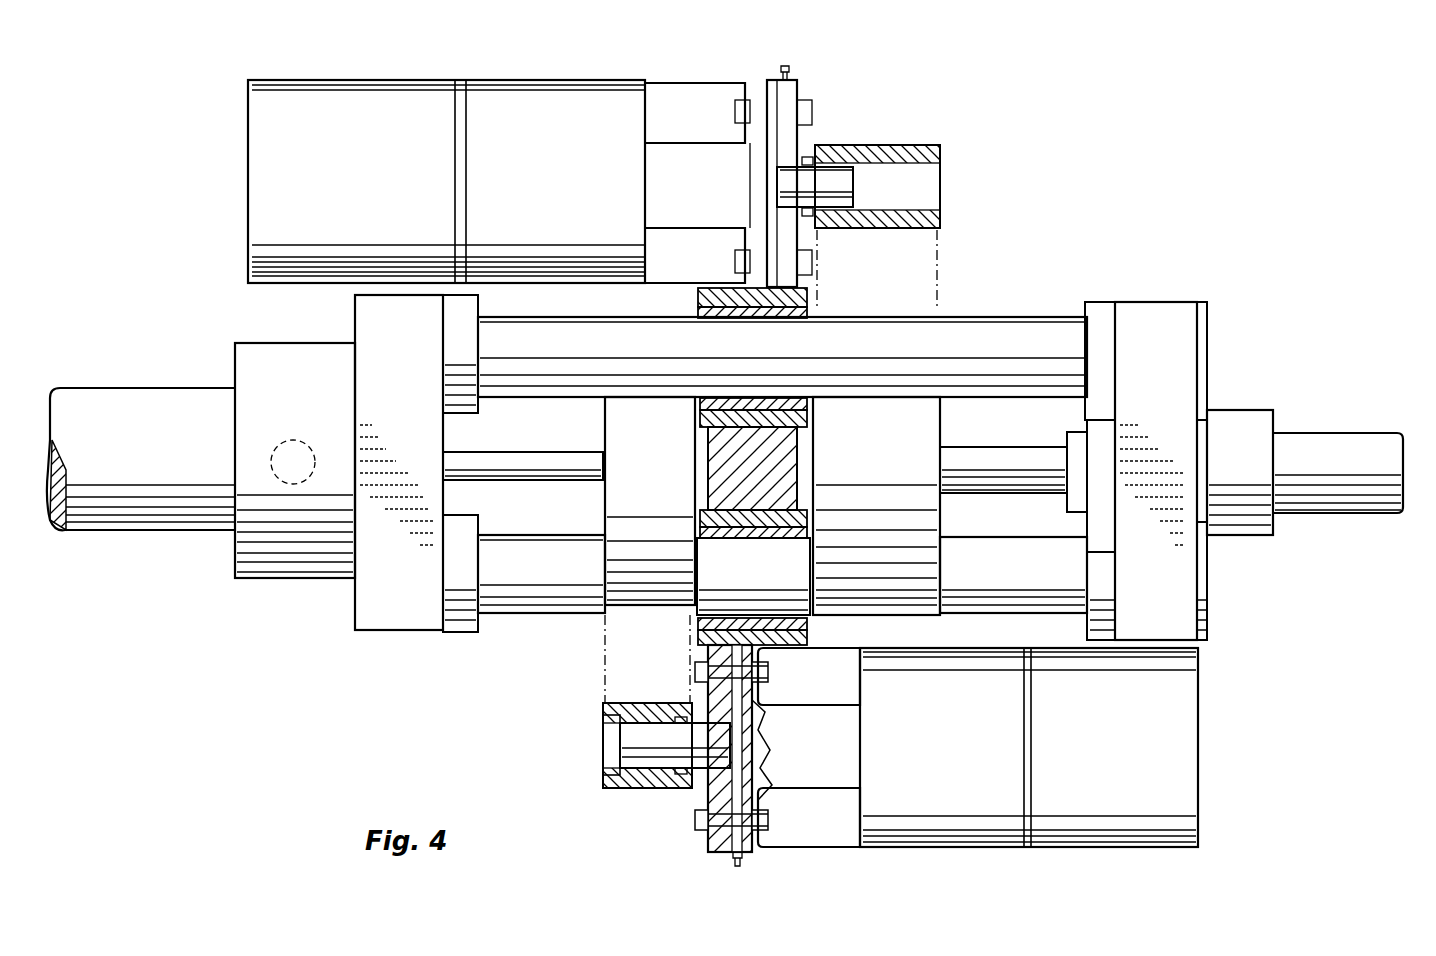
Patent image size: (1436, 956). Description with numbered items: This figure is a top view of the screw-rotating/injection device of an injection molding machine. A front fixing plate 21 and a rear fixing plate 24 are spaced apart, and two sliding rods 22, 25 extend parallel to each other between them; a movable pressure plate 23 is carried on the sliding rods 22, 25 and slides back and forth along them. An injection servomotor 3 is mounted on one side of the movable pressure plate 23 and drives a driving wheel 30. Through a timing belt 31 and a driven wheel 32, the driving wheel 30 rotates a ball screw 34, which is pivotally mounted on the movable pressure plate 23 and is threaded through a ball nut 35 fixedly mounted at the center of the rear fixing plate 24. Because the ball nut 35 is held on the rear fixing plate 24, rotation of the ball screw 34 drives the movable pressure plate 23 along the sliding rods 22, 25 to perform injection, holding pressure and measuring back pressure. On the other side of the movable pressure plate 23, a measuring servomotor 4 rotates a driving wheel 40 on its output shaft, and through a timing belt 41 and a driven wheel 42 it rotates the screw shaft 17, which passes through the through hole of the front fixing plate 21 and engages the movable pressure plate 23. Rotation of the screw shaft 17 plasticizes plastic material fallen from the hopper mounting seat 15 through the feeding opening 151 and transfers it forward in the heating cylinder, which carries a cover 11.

The injection servomotor 3 is at (557, 100).
The measuring servomotor 4 is at (946, 818).
The cover 11 is at (128, 395).
The hopper mounting seat 15 is at (291, 568).
The feeding opening 151 is at (286, 485).
The screw shaft 17 is at (527, 466).
The front fixing plate 21 is at (395, 615).
The sliding rod 22 is at (970, 330).
The movable pressure plate 23 is at (787, 460).
The rear fixing plate 24 is at (1165, 300).
The sliding rod 25 is at (557, 606).
The driving wheel 30 is at (925, 170).
The timing belt 31 is at (930, 250).
The driven wheel 32 is at (920, 418).
The ball screw 34 is at (1318, 445).
The ball nut 35 is at (1243, 415).
The driving wheel 40 is at (663, 770).
The timing belt 41 is at (612, 682).
The driven wheel 42 is at (645, 596).